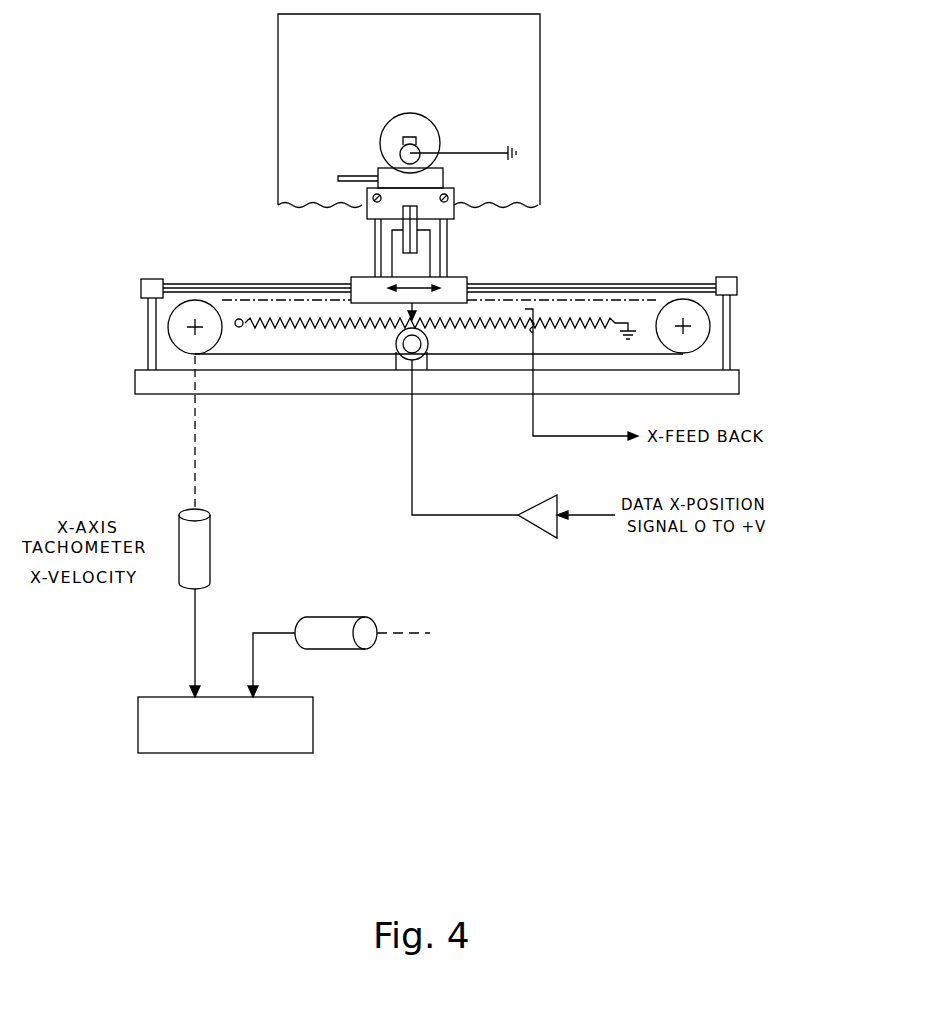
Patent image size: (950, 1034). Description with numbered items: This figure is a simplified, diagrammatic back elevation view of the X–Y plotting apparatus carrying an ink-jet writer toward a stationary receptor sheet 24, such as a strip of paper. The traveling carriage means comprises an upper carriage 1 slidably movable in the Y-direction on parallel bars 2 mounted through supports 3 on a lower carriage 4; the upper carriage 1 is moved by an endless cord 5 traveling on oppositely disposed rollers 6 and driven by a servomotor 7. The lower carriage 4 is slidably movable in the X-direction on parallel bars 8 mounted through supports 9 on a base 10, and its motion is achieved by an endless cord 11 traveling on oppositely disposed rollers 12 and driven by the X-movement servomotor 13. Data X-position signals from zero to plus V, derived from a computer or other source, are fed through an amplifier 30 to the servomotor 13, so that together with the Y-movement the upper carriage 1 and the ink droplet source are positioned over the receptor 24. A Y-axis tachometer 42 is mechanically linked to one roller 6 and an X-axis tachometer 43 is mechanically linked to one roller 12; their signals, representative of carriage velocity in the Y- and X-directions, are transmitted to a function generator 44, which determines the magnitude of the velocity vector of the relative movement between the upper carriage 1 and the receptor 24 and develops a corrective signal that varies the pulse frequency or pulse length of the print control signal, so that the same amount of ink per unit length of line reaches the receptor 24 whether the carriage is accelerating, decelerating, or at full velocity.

The upper carriage 1 is at (444, 207).
The parallel bars 2 is at (373, 198).
The supports 3 is at (445, 262).
The lower carriage 4 is at (368, 280).
The endless cord 5 is at (420, 237).
The rollers 6 is at (417, 248).
The servomotor 7 is at (398, 262).
The parallel bars 8 is at (204, 284).
The supports 9 is at (727, 348).
The base 10 is at (730, 383).
The endless cord 11 is at (596, 296).
The rollers 12 is at (180, 320).
The servomotor 13 is at (405, 365).
The receptor sheet 24 is at (522, 50).
The amplifier 30 is at (540, 515).
The Y-axis tachometer 42 is at (330, 625).
The X-axis tachometer 43 is at (200, 545).
The function generator 44 is at (303, 722).